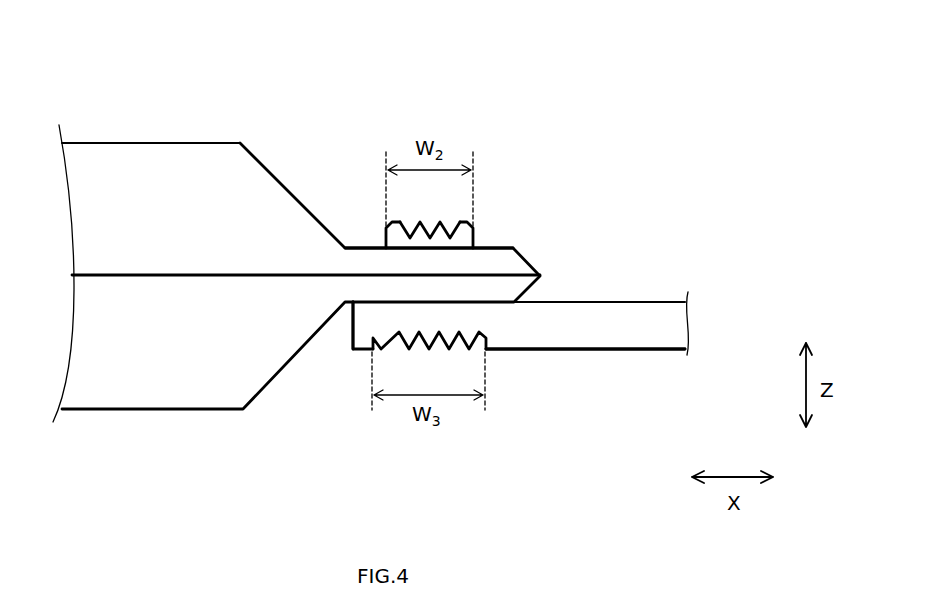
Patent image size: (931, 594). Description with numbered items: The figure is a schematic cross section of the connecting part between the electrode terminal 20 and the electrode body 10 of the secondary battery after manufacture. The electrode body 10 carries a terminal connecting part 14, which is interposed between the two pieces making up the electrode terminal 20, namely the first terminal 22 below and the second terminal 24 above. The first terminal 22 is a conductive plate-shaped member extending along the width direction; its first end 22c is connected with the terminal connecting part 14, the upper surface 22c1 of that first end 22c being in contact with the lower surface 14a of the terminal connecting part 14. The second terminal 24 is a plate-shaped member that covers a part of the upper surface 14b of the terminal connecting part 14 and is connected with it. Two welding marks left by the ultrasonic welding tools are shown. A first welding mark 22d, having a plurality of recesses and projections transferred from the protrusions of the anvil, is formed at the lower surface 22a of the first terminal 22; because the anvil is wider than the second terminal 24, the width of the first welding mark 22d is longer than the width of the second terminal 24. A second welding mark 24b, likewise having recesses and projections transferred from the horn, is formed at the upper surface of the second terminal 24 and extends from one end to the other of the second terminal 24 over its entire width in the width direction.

The electrode body 10 is at (117, 120).
The terminal connecting part 14 is at (532, 285).
The lower surface 14a is at (480, 302).
The upper surface 14b is at (365, 247).
The electrode terminal 20 is at (605, 180).
The first terminal 22 is at (667, 303).
The lower surface 22a is at (643, 350).
The first end 22c is at (358, 320).
The upper surface 22c1 is at (396, 300).
The first welding mark 22d is at (472, 352).
The second terminal 24 is at (465, 238).
The second welding mark 24b is at (462, 215).